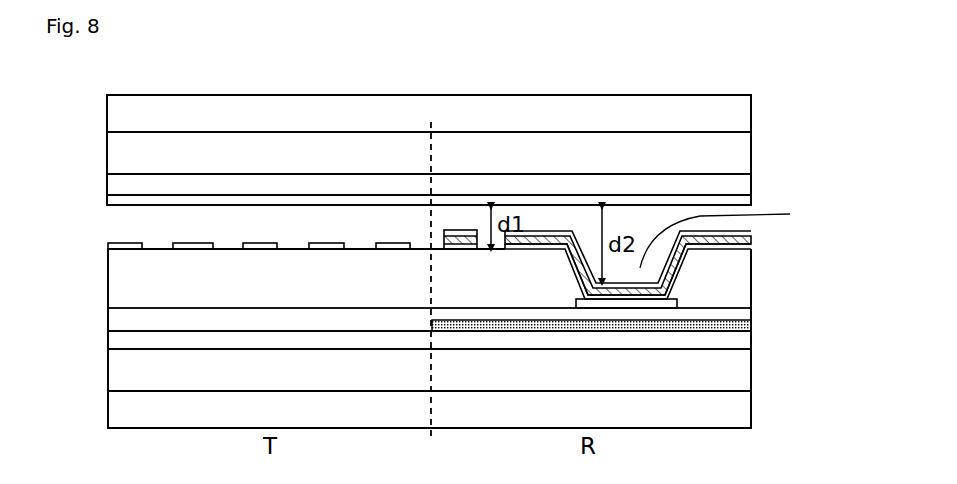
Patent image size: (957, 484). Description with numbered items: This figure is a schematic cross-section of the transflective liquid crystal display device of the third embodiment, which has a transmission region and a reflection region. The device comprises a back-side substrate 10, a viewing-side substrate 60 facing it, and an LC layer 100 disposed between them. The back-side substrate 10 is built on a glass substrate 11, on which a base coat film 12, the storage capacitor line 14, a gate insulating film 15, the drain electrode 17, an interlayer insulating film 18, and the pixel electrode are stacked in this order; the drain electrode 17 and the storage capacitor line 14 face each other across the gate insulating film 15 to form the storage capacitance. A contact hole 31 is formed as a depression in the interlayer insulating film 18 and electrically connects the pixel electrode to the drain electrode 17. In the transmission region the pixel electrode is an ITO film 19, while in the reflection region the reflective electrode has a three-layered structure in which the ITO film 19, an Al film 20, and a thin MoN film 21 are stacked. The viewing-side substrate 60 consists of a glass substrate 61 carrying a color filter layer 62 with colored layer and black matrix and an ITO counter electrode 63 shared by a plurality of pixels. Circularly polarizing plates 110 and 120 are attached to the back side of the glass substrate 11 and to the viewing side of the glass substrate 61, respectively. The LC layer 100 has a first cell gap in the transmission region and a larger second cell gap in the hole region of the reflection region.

The circularly polarizing plate 120 is at (745, 110).
The glass substrate 61 is at (745, 150).
The color filter layer 62 is at (745, 184).
The counter electrode 63 is at (745, 202).
The viewing-side substrate 60 is at (105, 95).
The LC layer 100 is at (105, 205).
The back-side substrate 10 is at (105, 249).
The circularly polarizing plate 110 is at (745, 408).
The glass substrate 11 is at (745, 375).
The base coat film 12 is at (745, 345).
The storage capacitor line 14 is at (745, 326).
The gate insulating film 15 is at (745, 312).
The drain electrode 17 is at (637, 306).
The interlayer insulating film 18 is at (745, 288).
The ITO film 19 is at (752, 251).
The Al film 20 is at (752, 243).
The MoN film 21 is at (752, 233).
The contact hole 31 is at (733, 236).